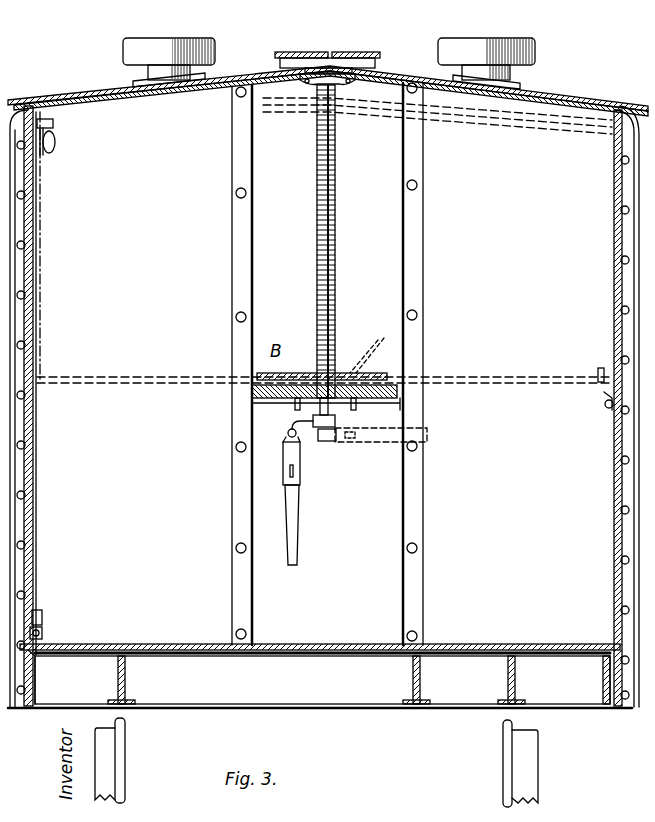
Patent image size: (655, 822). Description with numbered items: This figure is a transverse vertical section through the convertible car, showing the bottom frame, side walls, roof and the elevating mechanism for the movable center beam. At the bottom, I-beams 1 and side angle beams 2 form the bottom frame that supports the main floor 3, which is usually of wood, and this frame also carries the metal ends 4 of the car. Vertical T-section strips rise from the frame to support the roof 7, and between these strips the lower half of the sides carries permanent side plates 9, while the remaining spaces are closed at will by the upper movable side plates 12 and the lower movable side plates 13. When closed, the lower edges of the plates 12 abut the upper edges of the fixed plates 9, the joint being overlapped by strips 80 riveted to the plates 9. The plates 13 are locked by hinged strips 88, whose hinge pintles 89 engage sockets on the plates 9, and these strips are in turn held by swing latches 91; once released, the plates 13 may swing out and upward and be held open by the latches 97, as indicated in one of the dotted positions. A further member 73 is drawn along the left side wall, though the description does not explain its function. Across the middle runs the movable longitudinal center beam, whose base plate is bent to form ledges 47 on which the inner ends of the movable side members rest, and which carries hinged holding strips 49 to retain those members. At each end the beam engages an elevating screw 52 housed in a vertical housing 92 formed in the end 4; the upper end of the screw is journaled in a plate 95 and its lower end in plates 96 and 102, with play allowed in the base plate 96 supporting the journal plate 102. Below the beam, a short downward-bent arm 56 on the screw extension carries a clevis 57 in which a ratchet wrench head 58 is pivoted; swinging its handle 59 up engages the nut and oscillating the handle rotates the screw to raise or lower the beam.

The I-beam 1 is at (507, 680).
The side angle beam 2 is at (604, 686).
The main floor 3 is at (289, 648).
The end 4 is at (455, 364).
The roof 7 is at (212, 86).
The permanent side plate 9 is at (611, 578).
The upper movable side plate 12 is at (494, 114).
The lower movable side plate 13 is at (34, 518).
The ledge 47 is at (253, 388).
The holding strip 49 is at (385, 372).
The elevating screw 52 is at (337, 266).
The arm 56 is at (313, 420).
The clevis 57 is at (291, 438).
The wrench head 58 is at (285, 456).
The handle 59 is at (300, 550).
The wall rod 73 is at (42, 270).
The strip 80 is at (606, 400).
The hinged strip 88 is at (43, 634).
The hinge pintle 89 is at (57, 660).
The swing latch 91 is at (43, 617).
The vertical housing 92 is at (262, 365).
The journal plate 95 is at (317, 83).
The base plate 96 is at (388, 404).
The latch 97 is at (55, 146).
The journal plate 102 is at (420, 447).